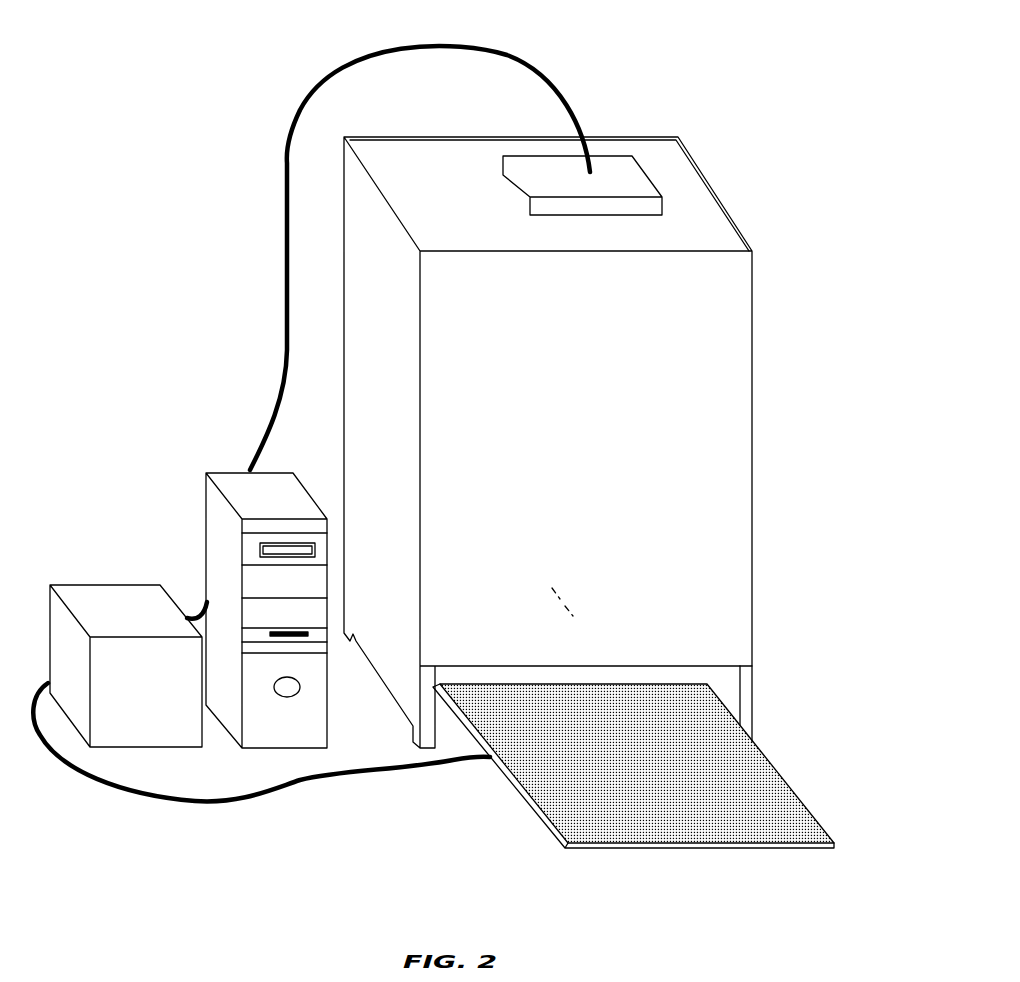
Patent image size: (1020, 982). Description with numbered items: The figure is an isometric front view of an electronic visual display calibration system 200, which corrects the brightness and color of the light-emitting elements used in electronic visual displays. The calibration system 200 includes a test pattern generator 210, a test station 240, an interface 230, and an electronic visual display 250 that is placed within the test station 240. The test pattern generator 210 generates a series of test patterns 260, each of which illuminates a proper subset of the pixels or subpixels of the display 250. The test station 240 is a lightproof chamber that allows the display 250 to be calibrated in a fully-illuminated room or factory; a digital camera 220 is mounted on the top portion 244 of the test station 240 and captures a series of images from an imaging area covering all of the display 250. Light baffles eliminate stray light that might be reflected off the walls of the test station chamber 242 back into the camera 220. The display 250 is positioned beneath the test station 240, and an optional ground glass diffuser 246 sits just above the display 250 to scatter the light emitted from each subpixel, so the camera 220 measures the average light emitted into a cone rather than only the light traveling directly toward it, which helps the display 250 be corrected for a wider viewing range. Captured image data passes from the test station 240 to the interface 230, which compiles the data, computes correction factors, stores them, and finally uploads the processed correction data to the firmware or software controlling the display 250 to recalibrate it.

The electronic visual display calibration system 200 is at (740, 81).
The test pattern generator 210 is at (103, 605).
The digital camera 220 is at (650, 183).
The interface 230 is at (220, 553).
The test station 240 is at (574, 442).
The test station chamber 242 is at (377, 437).
The top portion 244 is at (723, 228).
The ground glass diffuser 246 is at (578, 620).
The electronic visual display 250 is at (762, 752).
The test patterns 260 is at (563, 789).